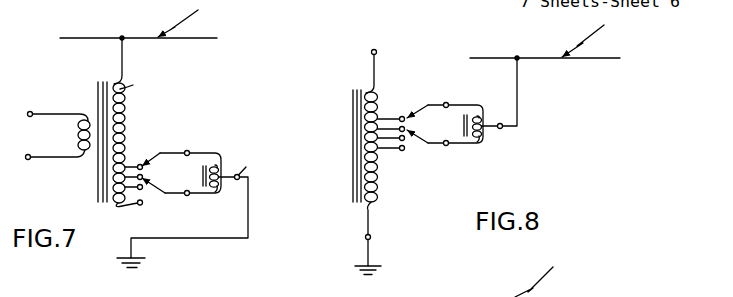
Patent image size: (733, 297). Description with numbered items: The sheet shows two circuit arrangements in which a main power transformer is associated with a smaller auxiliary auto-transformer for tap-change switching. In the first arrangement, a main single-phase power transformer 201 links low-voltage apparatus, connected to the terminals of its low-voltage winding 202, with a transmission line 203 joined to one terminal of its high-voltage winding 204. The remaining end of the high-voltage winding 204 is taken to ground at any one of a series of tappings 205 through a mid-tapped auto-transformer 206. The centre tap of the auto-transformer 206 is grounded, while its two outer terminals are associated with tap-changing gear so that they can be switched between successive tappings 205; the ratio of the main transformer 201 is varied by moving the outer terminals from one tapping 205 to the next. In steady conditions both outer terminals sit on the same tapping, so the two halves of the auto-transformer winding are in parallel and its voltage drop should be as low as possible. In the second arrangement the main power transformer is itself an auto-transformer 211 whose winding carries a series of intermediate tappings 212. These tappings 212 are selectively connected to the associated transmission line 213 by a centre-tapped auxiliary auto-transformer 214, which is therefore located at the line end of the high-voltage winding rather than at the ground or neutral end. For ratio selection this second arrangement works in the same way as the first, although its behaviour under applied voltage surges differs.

In FIG. 7, the main single-phase power transformer 201 is at (129, 126).
In FIG. 7, the low-voltage winding 202 is at (81, 151).
In FIG. 7, the transmission line 203 is at (203, 43).
In FIG. 7, the high-voltage winding 204 is at (133, 85).
In FIG. 7, the tappings 205 is at (141, 205).
In FIG. 7, the mid-tapped auto-transformer 206 is at (222, 158).
In FIG. 8, the auto-transformer 211 is at (350, 159).
In FIG. 8, the intermediate tappings 212 is at (404, 150).
In FIG. 8, the transmission line 213 is at (597, 62).
In FIG. 8, the centre-tapped auxiliary auto-transformer 214 is at (483, 142).